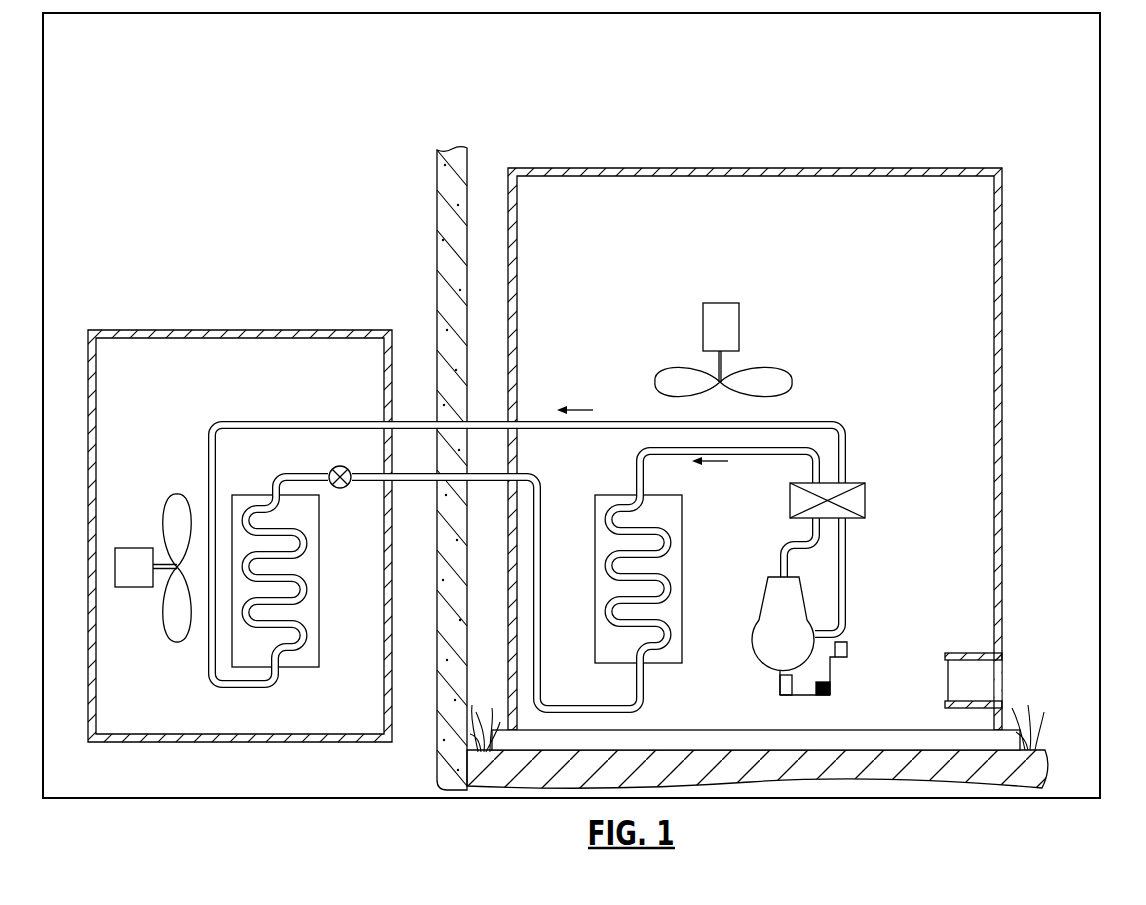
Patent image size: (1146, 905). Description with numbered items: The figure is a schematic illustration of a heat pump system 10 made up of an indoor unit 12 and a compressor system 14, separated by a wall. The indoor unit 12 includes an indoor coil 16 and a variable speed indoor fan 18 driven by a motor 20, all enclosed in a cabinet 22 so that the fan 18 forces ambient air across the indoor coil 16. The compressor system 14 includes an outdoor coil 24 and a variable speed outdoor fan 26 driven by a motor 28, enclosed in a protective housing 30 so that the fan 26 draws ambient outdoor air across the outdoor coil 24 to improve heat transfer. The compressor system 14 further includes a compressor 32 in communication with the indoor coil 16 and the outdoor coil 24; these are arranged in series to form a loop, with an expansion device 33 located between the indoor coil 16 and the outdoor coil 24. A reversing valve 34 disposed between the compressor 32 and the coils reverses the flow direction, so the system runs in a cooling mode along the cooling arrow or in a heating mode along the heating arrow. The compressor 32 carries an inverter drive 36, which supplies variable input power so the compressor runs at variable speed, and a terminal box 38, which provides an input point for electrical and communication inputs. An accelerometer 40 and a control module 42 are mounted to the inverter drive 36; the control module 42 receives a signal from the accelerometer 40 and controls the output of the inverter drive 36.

The heat pump system 10 is at (373, 168).
The indoor unit 12 is at (240, 508).
The compressor system 14 is at (755, 420).
The indoor coil 16 is at (315, 567).
The indoor fan 18 is at (182, 494).
The motor 20 is at (137, 548).
The cabinet 22 is at (302, 330).
The outdoor coil 24 is at (682, 598).
The outdoor fan 26 is at (656, 382).
The motor 28 is at (703, 330).
The protective housing 30 is at (875, 168).
The compressor 32 is at (758, 660).
The expansion device 33 is at (332, 468).
The reversing valve 34 is at (855, 483).
The inverter drive 36 is at (808, 698).
The terminal box 38 is at (847, 648).
The accelerometer 40 is at (830, 693).
The control module 42 is at (776, 690).